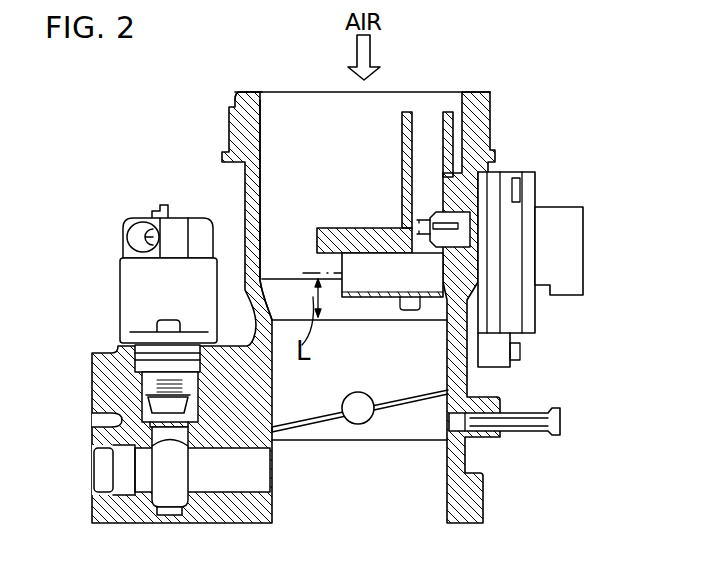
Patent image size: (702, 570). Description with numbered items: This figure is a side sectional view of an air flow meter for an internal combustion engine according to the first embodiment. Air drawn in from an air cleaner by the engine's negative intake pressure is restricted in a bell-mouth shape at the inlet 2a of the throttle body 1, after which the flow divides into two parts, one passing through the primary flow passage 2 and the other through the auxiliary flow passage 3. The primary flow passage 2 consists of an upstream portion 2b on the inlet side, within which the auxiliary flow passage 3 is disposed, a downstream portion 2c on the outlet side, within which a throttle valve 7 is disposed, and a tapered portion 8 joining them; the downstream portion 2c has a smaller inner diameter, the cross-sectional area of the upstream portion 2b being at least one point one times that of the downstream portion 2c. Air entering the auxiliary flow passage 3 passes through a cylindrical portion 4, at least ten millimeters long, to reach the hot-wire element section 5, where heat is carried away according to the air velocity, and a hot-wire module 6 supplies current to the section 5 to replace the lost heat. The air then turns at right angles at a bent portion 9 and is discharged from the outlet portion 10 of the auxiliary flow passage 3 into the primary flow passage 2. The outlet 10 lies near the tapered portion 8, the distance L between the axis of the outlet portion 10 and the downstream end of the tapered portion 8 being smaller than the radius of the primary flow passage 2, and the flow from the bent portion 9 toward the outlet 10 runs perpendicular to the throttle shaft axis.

The throttle body 1 is at (453, 378).
The primary flow passage 2 is at (317, 108).
The inlet 2a is at (258, 90).
The upstream portion 2b is at (333, 162).
The downstream portion 2c is at (378, 372).
The auxiliary flow passage 3 is at (432, 112).
The cylindrical portion 4 is at (447, 133).
The hot-wire element section 5 is at (420, 217).
The hot-wire module 6 is at (508, 248).
The throttle valve 7 is at (303, 425).
The tapered portion 8 is at (270, 298).
The bent portion 9 is at (427, 267).
The outlet portion 10 is at (345, 265).